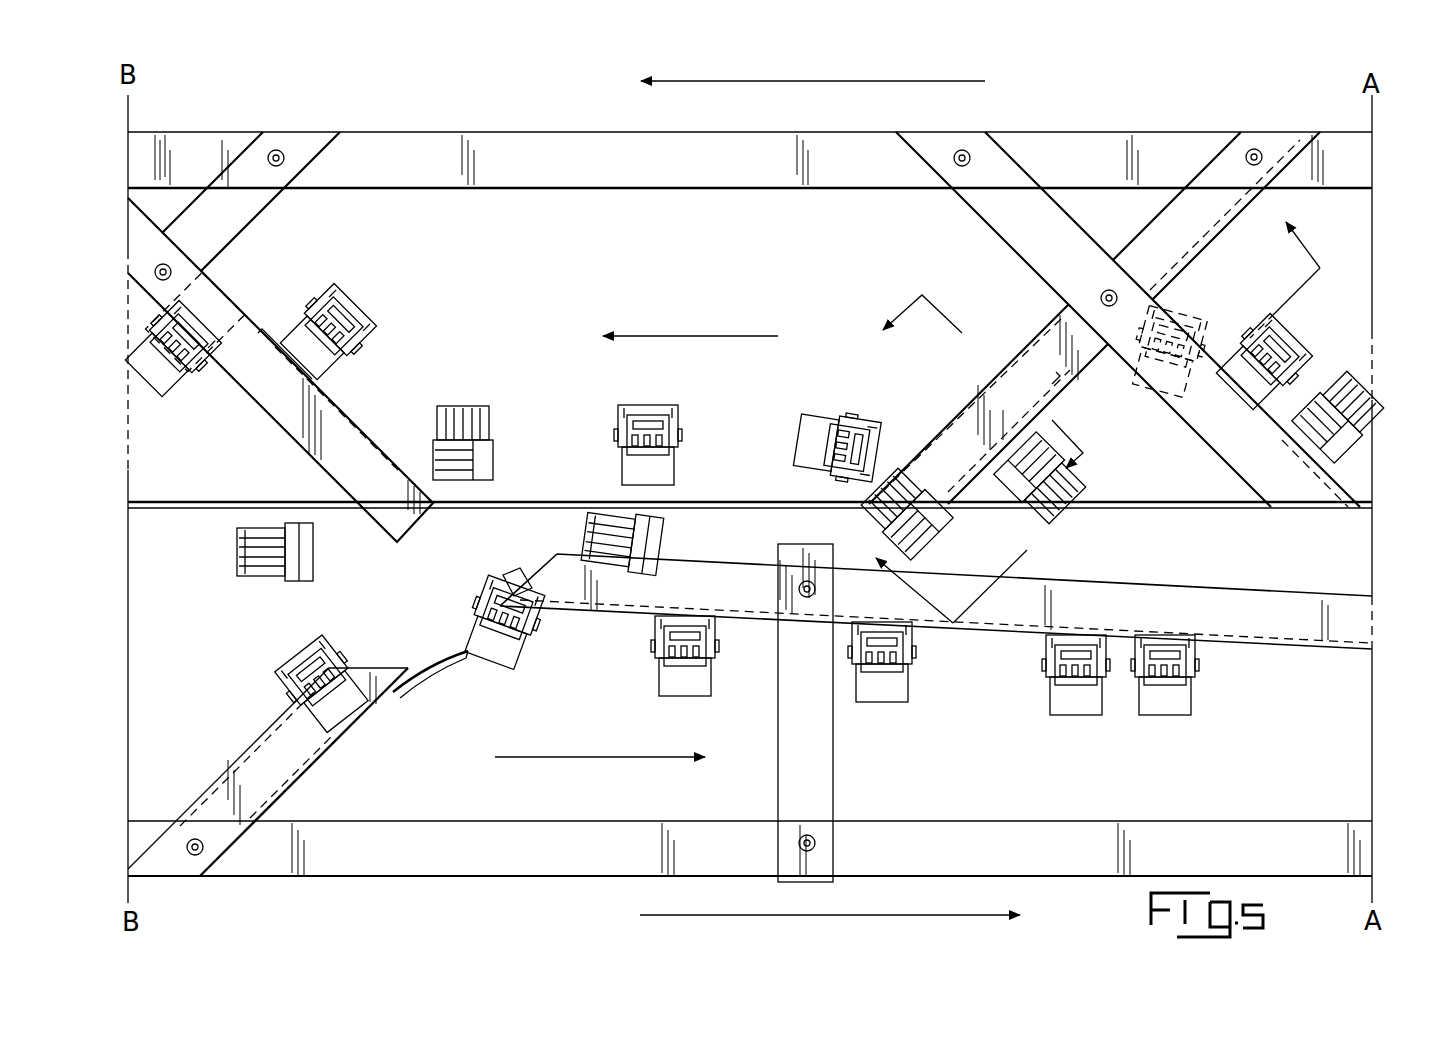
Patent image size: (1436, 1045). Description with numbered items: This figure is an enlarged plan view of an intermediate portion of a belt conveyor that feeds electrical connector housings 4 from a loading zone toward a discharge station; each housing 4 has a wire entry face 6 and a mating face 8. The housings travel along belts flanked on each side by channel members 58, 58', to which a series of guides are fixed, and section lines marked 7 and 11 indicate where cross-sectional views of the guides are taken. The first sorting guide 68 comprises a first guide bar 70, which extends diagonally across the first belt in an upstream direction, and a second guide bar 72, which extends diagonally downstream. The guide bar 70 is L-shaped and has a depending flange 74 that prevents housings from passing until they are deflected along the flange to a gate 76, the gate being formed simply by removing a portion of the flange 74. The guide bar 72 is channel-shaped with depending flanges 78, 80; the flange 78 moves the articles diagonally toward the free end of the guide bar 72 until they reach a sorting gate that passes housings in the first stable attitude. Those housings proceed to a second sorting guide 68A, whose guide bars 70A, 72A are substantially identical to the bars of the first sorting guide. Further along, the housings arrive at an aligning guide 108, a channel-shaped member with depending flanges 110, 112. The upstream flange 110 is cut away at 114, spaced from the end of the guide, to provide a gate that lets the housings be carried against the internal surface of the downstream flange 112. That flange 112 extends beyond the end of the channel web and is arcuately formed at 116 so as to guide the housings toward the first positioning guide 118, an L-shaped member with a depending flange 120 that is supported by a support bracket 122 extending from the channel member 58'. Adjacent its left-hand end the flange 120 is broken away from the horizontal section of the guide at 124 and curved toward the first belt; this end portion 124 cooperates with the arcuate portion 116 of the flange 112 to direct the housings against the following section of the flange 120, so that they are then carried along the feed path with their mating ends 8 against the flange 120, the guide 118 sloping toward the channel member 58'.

The electrical connector housing 4 is at (474, 405).
The wire entry face 6 is at (678, 698).
The section line 7 is at (979, 393).
The mating face 8 is at (488, 592).
The section line 11 is at (1086, 410).
The channel member 58 is at (750, 181).
The channel member 58' is at (750, 873).
The sorting guide 68 is at (1118, 252).
The second sorting guide 68A is at (172, 220).
The first guide bar 70 is at (1028, 192).
The guide bar 70A is at (334, 432).
The second guide bar 72 is at (1188, 256).
The guide bar 72A is at (262, 200).
The depending flange 74 is at (1300, 405).
The gate 76 is at (1188, 320).
The depending flange 78 is at (1050, 392).
The depending flange 80 is at (975, 390).
The aligning guide 108 is at (286, 778).
The upstream flange 110 is at (240, 760).
The downstream flange 112 is at (330, 751).
The cut-away 114 is at (272, 733).
The arcuate portion 116 is at (416, 686).
The first positioning guide 118 is at (1184, 590).
The depending flange 120 is at (968, 625).
The support bracket 122 is at (834, 766).
The end portion 124 is at (512, 576).